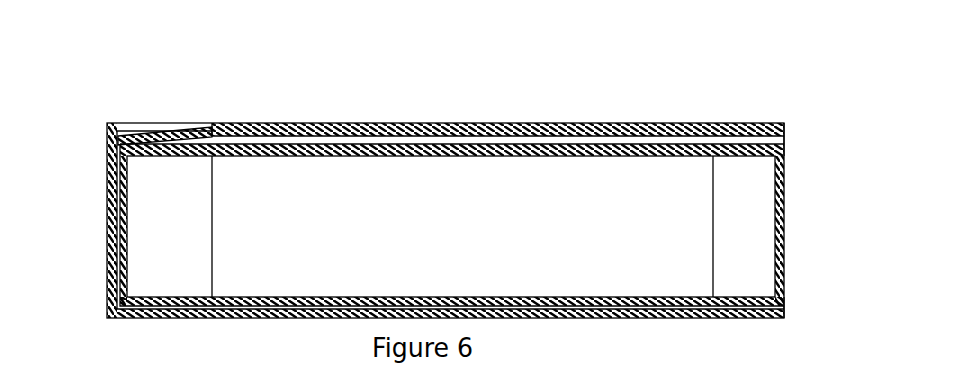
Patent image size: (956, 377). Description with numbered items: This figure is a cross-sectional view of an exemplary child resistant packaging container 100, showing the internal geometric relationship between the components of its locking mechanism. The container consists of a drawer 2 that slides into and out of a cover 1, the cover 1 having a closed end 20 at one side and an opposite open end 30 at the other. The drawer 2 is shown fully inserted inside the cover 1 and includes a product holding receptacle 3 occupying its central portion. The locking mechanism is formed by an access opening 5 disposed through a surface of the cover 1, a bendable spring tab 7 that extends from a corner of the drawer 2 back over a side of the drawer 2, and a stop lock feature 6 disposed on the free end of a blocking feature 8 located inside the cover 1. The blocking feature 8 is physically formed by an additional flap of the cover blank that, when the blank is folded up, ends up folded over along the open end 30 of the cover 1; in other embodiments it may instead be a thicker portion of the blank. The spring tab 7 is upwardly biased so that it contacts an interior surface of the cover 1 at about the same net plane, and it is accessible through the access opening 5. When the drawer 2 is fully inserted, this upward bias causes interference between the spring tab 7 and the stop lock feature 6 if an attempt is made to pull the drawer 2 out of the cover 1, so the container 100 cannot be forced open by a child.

The child resistant packaging container 100 is at (114, 96).
The cover 1 is at (148, 311).
The drawer 2 is at (128, 300).
The product holding receptacle 3 is at (460, 251).
The access opening 5 is at (186, 128).
The stop lock feature 6 is at (238, 129).
The spring tab 7 is at (147, 137).
The blocking feature 8 is at (784, 137).
The closed end 20 is at (107, 186).
The open end 30 is at (785, 313).